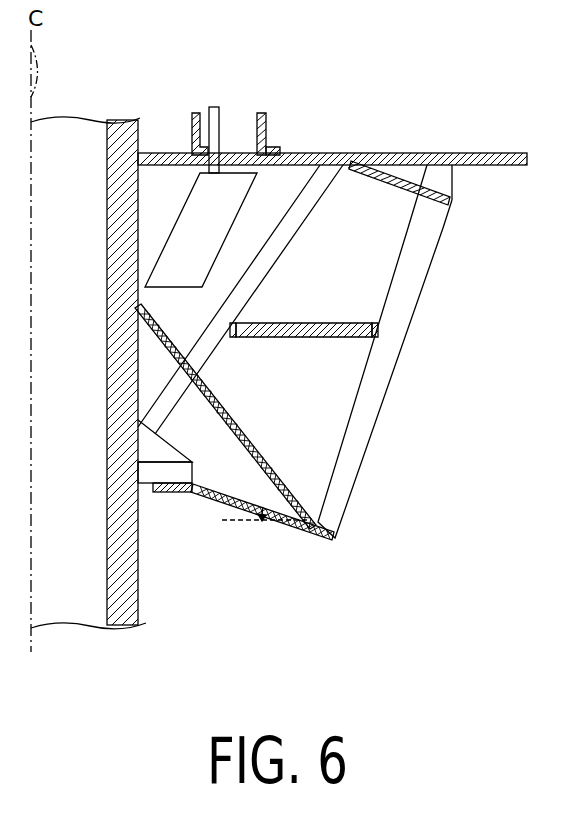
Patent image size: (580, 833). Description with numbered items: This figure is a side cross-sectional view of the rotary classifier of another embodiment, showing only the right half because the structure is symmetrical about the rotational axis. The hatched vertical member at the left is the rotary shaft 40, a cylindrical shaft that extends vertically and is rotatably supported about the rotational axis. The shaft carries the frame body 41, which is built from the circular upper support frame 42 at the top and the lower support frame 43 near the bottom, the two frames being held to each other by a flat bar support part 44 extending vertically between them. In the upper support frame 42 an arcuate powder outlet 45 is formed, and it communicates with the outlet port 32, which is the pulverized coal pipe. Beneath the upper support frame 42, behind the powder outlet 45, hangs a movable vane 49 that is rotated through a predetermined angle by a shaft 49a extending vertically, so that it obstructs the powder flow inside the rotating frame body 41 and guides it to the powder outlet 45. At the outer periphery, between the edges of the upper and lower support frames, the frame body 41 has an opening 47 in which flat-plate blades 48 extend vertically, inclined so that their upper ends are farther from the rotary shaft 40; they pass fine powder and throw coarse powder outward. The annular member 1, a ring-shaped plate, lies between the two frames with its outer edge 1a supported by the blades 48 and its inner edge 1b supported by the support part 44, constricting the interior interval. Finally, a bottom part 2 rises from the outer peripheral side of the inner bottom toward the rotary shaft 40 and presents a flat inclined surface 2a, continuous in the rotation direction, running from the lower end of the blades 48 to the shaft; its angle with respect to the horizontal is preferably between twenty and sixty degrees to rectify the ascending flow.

The annular member 1 is at (323, 323).
The outer edge 1a is at (378, 328).
The inner edge 1b is at (230, 330).
The bottom part 2 is at (226, 413).
The inclined surface 2a is at (257, 489).
The outlet port 32 is at (274, 148).
The rotary shaft 40 is at (122, 622).
The frame body 41 is at (392, 166).
The upper support frame 42 is at (337, 153).
The lower support frame 43 is at (202, 492).
The support part 44 is at (188, 392).
The powder outlet 45 is at (252, 155).
The opening 47 is at (389, 377).
The blade 48 is at (433, 226).
The movable vane 49 is at (180, 237).
The shaft 49a is at (203, 112).